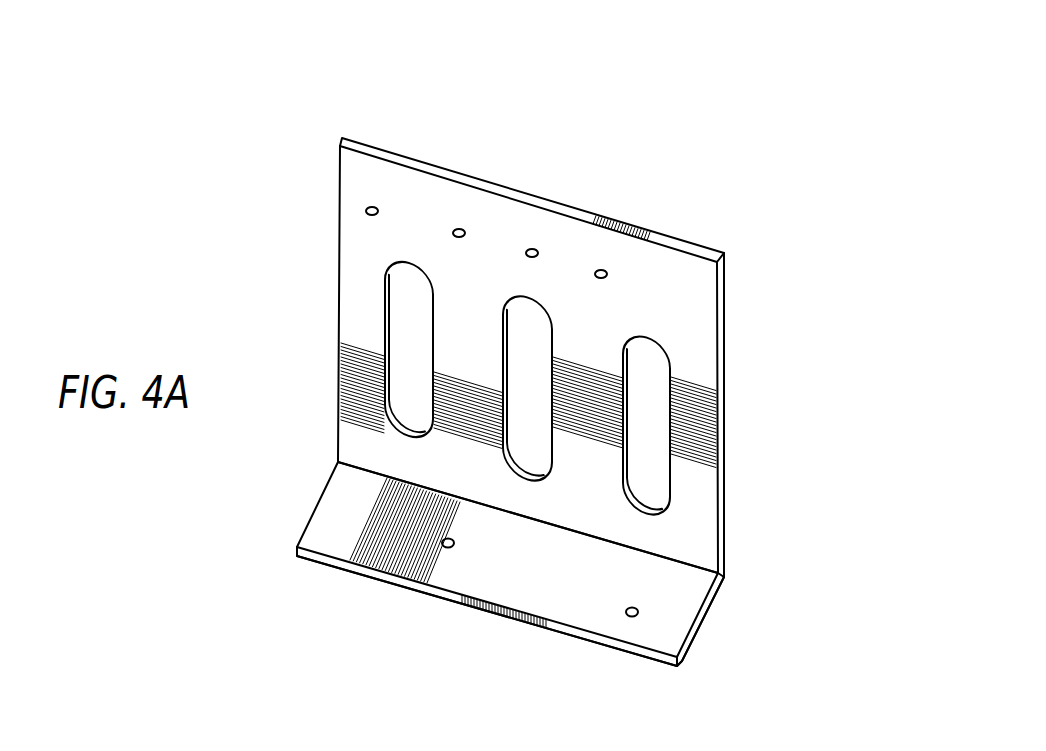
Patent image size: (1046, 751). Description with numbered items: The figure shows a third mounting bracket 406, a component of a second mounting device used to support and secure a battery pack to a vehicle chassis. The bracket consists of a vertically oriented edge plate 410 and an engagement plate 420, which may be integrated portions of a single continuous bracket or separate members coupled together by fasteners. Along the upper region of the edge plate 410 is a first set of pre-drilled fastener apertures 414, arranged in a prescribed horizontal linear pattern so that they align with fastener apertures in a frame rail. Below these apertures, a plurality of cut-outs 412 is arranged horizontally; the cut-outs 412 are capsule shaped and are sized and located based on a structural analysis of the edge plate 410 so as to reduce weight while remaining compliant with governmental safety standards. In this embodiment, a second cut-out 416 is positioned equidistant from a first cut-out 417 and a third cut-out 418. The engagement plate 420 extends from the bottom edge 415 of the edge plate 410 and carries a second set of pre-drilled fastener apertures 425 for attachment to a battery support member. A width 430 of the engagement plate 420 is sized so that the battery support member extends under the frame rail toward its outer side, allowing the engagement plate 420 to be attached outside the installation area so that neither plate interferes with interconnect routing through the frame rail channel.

The mounting bracket assembly 406 is at (312, 128).
The edge plate 410 is at (340, 345).
The cut-outs 412 is at (730, 480).
The first set of pre-drilled fastener apertures 414 is at (601, 270).
The bottom edge 415 is at (720, 573).
The second cut-out 416 is at (537, 337).
The first cut-out 417 is at (408, 325).
The third cut-out 418 is at (652, 452).
The engagement plate 420 is at (317, 502).
The second set of pre-drilled fastener apertures 425 is at (455, 543).
The width 430 is at (697, 628).